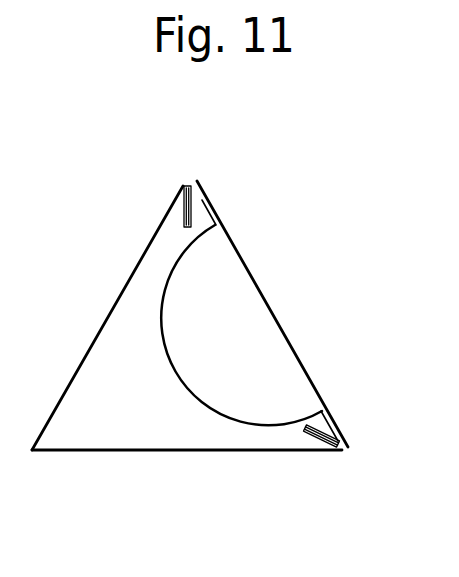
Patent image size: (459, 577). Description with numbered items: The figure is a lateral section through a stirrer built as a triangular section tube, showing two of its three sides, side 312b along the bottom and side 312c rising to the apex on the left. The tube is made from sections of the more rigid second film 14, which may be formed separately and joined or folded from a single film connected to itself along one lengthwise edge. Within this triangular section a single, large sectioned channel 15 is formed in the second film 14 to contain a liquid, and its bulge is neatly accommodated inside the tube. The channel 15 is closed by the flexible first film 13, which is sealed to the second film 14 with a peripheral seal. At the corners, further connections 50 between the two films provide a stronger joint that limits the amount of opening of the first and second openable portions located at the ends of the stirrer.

The first film 13 is at (262, 287).
The second film 14 is at (168, 367).
The channel 15 is at (257, 352).
The further connection 50 is at (214, 196).
The side 312b is at (173, 452).
The side 312c is at (127, 284).